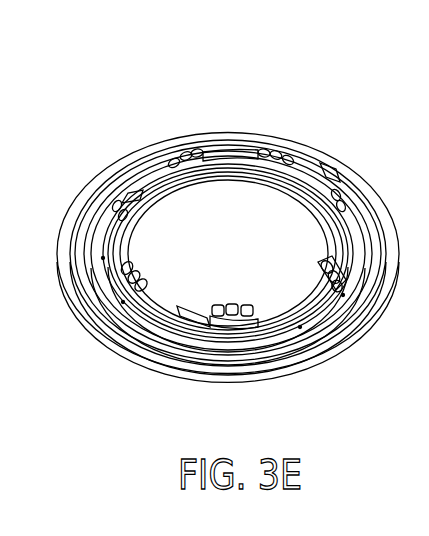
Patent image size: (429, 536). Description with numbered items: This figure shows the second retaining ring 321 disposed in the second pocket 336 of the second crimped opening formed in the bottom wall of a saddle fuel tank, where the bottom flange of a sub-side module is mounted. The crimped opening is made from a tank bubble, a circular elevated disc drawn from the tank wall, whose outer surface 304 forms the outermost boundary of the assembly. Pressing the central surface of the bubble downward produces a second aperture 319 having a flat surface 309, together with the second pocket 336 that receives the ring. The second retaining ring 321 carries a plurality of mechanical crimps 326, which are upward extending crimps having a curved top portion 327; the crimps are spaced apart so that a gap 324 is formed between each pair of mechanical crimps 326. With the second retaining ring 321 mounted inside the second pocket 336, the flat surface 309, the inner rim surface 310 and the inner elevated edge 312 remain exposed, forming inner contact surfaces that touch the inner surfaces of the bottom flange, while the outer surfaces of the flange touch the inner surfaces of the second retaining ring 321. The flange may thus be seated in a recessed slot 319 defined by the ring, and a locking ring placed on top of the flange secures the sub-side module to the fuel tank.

The outer surface 304 is at (355, 253).
The second pocket 336 is at (362, 257).
The inner elevated edge 312 is at (135, 198).
The inner rim surface 310 is at (138, 243).
The second aperture 319 is at (247, 218).
The flat surface 309 is at (235, 240).
The mechanical crimps 326 is at (324, 274).
The curved top portion 327 is at (136, 276).
The second retaining ring 321 is at (177, 307).
The gap 324 is at (262, 325).